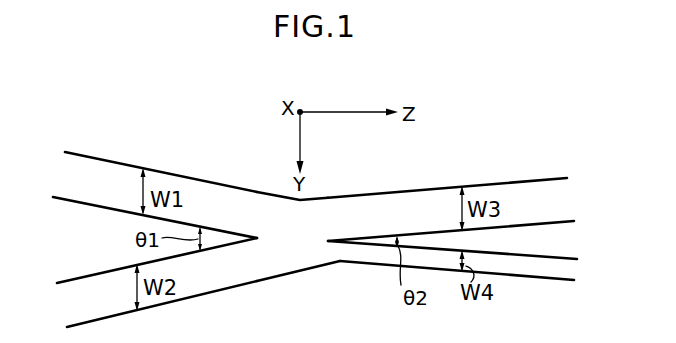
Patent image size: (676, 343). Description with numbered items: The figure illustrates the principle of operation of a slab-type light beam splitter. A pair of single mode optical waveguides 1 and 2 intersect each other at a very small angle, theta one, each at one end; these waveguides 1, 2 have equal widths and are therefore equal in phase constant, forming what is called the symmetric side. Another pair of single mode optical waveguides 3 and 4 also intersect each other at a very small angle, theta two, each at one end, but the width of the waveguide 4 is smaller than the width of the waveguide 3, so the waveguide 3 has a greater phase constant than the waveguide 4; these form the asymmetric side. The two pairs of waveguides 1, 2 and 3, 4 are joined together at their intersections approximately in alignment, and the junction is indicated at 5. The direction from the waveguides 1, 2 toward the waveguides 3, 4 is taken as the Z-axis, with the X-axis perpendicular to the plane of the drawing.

The single mode optical waveguide 1 is at (112, 172).
The single mode optical waveguide 2 is at (119, 300).
The single mode optical waveguide 3 is at (541, 198).
The single mode optical waveguide 4 is at (542, 268).
The junction 5 is at (303, 237).